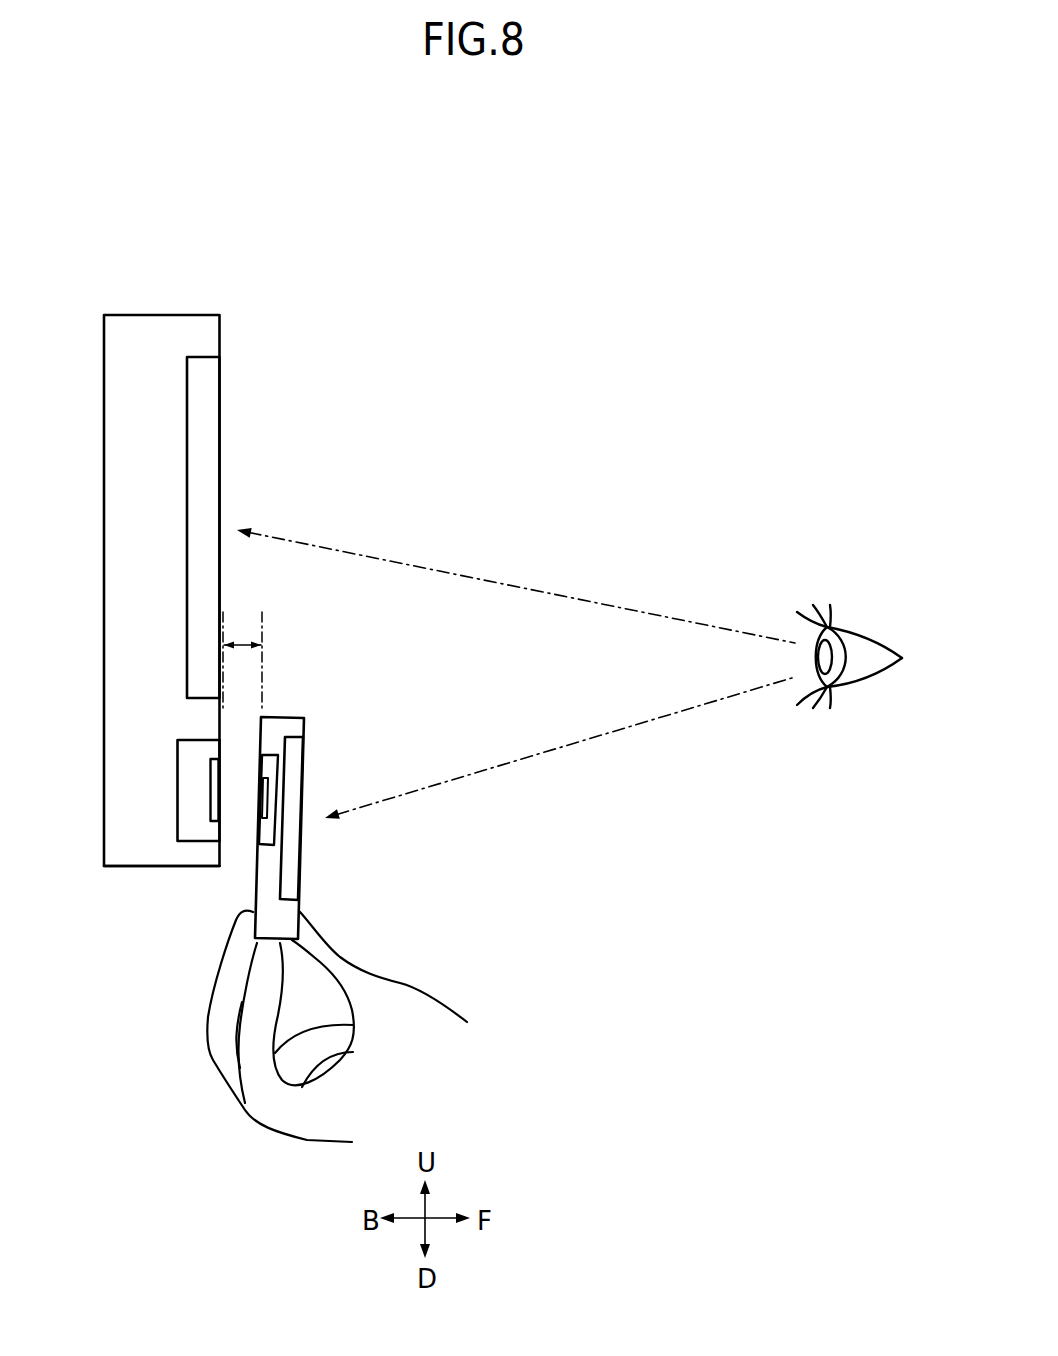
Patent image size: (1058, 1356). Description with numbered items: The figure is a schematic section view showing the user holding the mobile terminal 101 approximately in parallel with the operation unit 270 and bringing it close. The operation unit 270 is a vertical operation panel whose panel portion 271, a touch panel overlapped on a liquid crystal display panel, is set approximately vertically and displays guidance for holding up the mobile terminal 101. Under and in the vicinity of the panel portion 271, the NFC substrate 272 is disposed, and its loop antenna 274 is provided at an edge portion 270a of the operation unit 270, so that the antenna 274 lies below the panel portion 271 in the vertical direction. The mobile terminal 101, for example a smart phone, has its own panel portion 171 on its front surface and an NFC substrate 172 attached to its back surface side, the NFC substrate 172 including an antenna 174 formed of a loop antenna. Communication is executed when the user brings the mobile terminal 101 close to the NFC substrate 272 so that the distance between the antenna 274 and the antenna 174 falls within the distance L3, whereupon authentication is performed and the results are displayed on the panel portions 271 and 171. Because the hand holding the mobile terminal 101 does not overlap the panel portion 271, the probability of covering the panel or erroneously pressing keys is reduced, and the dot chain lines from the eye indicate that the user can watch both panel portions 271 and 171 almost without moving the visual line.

The operation unit 270 is at (208, 243).
The panel portion 271 is at (216, 424).
The NFC substrate 272 is at (177, 775).
The antenna 274 is at (178, 807).
The edge portion 270a is at (162, 868).
The distance L3 is at (242, 660).
The mobile terminal 101 is at (317, 680).
The panel portion 171 is at (302, 880).
The NFC substrate 172 is at (268, 753).
The antenna 174 is at (267, 788).